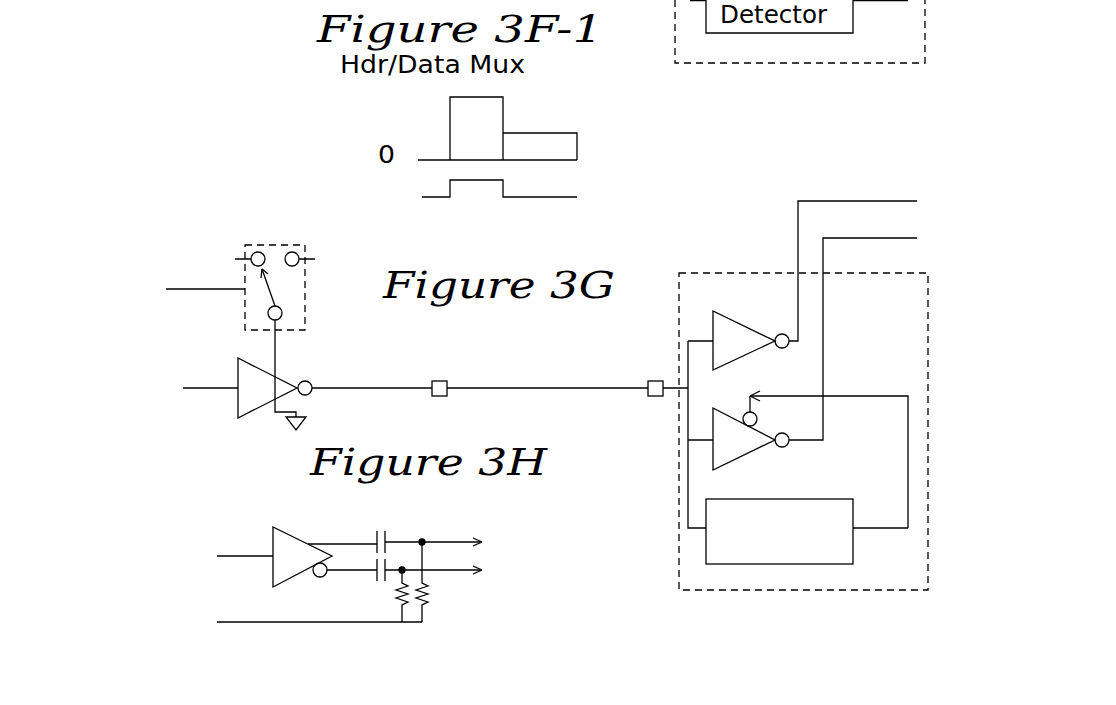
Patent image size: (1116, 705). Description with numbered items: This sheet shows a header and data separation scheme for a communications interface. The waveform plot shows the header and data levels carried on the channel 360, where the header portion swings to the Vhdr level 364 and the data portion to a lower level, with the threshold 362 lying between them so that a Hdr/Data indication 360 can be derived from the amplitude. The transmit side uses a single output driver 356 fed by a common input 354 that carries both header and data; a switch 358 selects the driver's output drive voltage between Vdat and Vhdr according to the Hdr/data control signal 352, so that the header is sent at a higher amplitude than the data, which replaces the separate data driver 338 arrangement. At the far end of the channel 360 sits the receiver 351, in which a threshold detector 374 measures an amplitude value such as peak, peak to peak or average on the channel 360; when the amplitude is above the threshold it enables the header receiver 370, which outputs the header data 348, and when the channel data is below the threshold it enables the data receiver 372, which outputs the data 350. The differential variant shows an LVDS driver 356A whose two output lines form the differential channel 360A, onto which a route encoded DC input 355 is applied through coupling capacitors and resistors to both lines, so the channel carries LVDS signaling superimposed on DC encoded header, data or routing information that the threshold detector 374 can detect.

In FIG. 3F-1, the data driver 338 is at (240, 0).
In FIG. 3F-1, the Vhdr header voltage level 364 is at (450, 97).
In FIG. 3F-1, the Vth threshold voltage level 362 is at (490, 125).
In FIG. 3F-1, the channel 360 is at (407, 192).
In FIG. 3G, the channel 360 is at (560, 363).
In FIG. 3G, the Hdr/data control signal 352 is at (142, 274).
In FIG. 3G, the switch 358 is at (305, 322).
In FIG. 3G, the common input 354 is at (125, 373).
In FIG. 3H, the common input 354 is at (160, 546).
In FIG. 3G, the output driver 356 is at (248, 421).
In FIG. 3G, the receiver 351 is at (803, 416).
In FIG. 3G, the header receiver 370 is at (755, 325).
In FIG. 3G, the header data 348 is at (856, 246).
In FIG. 3G, the Data output 350 is at (853, 327).
In FIG. 3G, the data receiver 372 is at (738, 459).
In FIG. 3G, the threshold detector 374 is at (782, 518).
In FIG. 3H, the LVDS driver 356A is at (297, 528).
In FIG. 3H, the route encoded DC input 355 is at (237, 613).
In FIG. 3H, the differential channel 360A is at (448, 574).